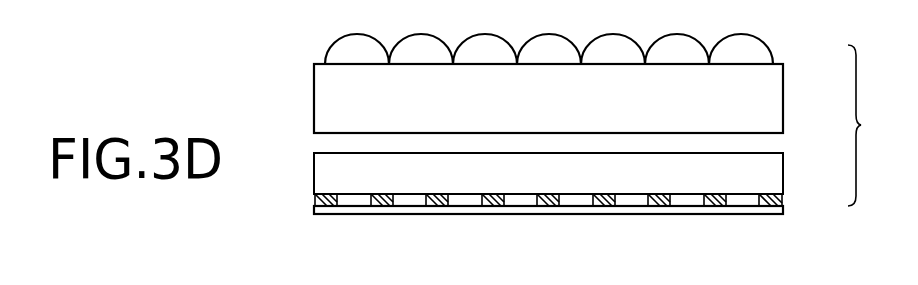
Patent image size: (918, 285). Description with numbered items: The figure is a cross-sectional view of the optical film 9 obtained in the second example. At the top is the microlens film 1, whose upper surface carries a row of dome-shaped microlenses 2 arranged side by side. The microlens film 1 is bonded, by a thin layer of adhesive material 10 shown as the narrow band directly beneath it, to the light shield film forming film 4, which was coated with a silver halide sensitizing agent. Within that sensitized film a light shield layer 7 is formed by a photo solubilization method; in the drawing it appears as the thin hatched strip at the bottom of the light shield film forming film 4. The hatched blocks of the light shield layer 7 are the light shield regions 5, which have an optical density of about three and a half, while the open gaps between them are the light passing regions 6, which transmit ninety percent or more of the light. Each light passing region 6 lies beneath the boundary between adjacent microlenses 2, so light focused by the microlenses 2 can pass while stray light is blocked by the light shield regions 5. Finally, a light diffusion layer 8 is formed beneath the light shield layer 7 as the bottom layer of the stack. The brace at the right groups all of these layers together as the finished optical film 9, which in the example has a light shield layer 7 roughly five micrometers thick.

The microlens film 1 is at (548, 98).
The microlenses 2 is at (760, 50).
The light shield film forming film 4 is at (548, 173).
The light shield region 5 is at (327, 207).
The light passing region 6 is at (413, 206).
The light shield layer 7 is at (316, 202).
The light diffusion layer 8 is at (783, 205).
The optical film 9 is at (867, 125).
The adhesive material 10 is at (772, 143).